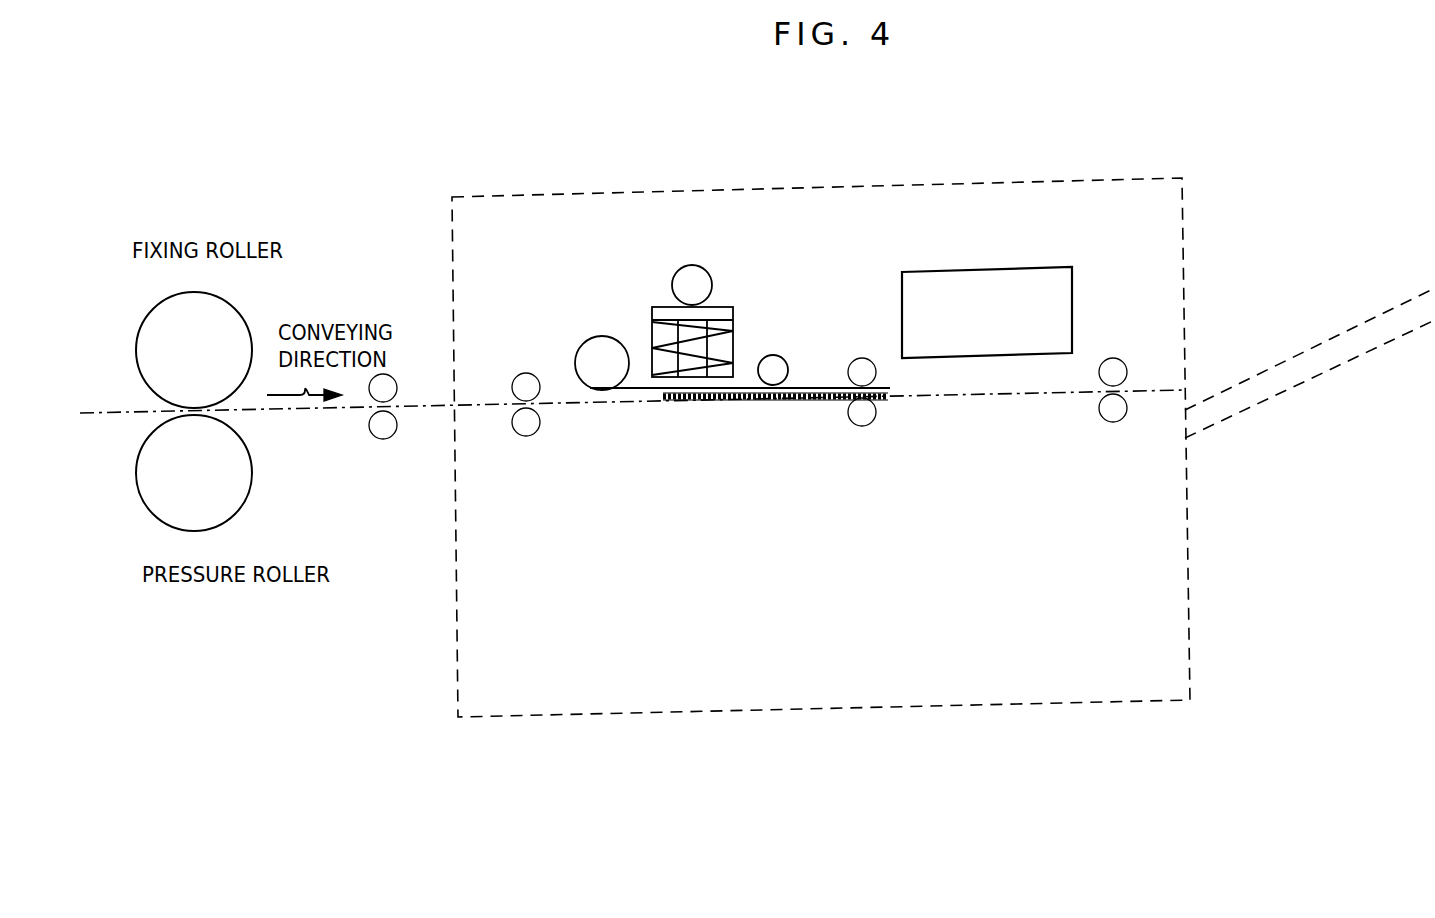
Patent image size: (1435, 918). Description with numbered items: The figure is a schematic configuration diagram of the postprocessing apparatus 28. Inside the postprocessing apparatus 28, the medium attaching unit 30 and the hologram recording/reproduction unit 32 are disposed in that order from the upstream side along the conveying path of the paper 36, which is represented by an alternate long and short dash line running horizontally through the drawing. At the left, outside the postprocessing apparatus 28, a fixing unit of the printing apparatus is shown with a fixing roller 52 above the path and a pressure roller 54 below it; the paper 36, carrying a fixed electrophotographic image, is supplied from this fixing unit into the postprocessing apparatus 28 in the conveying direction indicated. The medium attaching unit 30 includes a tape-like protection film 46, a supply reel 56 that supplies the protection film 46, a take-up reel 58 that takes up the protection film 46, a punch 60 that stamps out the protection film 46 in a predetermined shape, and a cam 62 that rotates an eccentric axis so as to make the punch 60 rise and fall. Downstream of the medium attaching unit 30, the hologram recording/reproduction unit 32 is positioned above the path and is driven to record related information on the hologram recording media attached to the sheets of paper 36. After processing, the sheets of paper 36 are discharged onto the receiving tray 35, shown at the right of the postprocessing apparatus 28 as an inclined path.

The postprocessing apparatus 28 is at (548, 192).
The medium attaching unit 30 is at (651, 262).
The hologram recording/reproduction unit 32 is at (940, 268).
The receiving tray 35 is at (1282, 390).
The paper 36 is at (818, 397).
The protection film 46 is at (643, 390).
The fixing roller 52 is at (238, 327).
The pressure roller 54 is at (238, 505).
The supply reel 56 is at (592, 355).
The take-up reel 58 is at (777, 370).
The punch 60 is at (652, 318).
The cam 62 is at (703, 283).